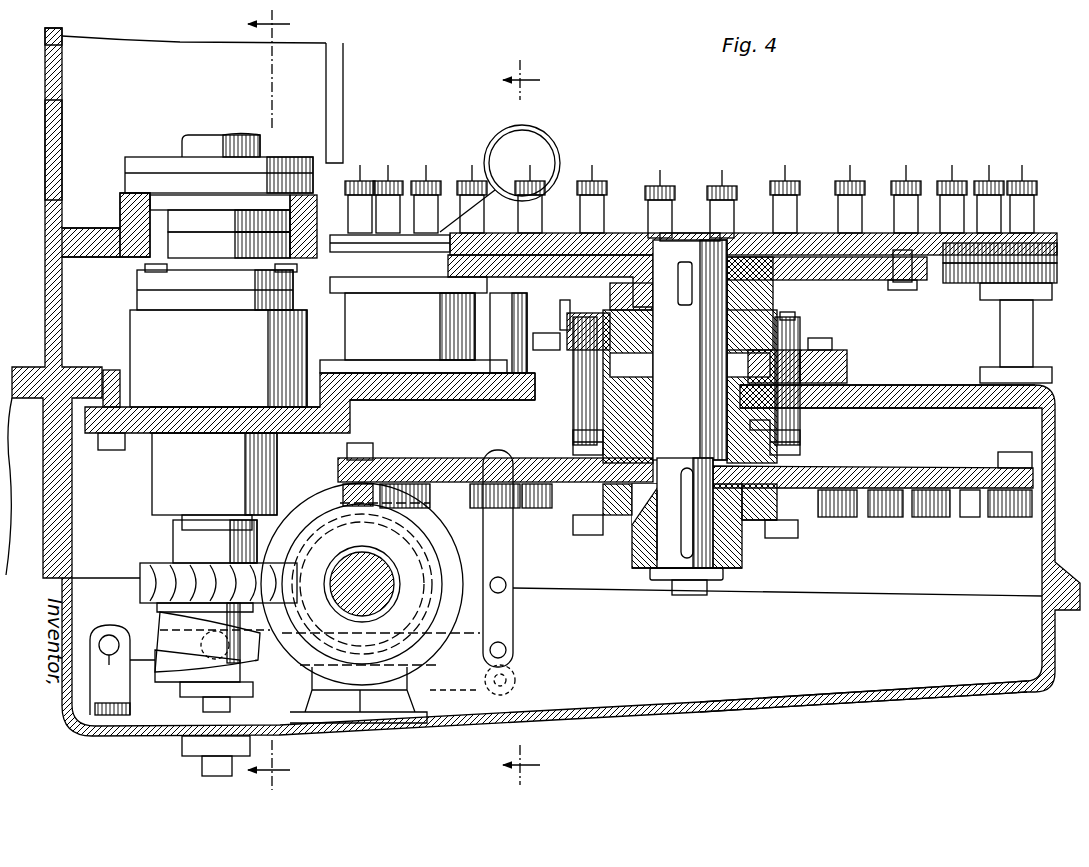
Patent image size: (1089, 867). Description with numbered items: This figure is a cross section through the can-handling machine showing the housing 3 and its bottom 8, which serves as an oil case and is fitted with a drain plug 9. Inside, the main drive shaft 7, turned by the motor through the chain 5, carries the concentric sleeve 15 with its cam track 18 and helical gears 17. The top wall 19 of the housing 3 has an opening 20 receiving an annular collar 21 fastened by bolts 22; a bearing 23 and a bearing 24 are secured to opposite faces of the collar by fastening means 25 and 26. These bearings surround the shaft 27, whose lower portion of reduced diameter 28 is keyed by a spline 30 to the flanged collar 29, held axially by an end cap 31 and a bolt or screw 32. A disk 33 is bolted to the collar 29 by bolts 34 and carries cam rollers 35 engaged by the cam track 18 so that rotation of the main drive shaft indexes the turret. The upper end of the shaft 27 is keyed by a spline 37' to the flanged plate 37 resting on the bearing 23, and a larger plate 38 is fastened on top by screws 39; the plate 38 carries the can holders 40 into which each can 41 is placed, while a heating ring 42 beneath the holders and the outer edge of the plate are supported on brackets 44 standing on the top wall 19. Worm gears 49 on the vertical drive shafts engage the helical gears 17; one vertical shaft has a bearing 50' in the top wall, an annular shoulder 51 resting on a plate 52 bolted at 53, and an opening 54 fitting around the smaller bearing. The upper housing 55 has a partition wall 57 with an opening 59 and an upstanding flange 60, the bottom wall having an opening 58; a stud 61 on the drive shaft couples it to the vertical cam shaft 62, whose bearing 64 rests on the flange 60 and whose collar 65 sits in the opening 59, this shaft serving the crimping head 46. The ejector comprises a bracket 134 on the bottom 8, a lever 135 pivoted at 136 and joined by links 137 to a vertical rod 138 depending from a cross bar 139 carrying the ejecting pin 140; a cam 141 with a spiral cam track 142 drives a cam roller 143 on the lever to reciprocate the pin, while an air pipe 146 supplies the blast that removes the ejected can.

The housing 3 is at (62, 497).
The crimping head 46 is at (43, 44).
The housing 55 is at (45, 145).
The partition wall 57 is at (68, 238).
The upstanding flange 60 is at (120, 209).
The bottom 8 is at (712, 725).
The chain 5 is at (530, 422).
The bearing 64 is at (143, 165).
The vertical cam shaft 62 is at (203, 138).
The collar 65 is at (233, 204).
The stud 61 is at (240, 236).
The opening 59 is at (145, 267).
The opening 58 is at (118, 325).
The bearing 50' is at (218, 358).
The annular shoulder 51 is at (145, 415).
The plate 52 is at (230, 415).
The opening 54 is at (172, 432).
The bolts 53 is at (340, 432).
The vertical rod 138 is at (490, 414).
The brackets 44 is at (408, 326).
The cross bar 139 is at (503, 345).
The plate 38 is at (816, 236).
The flanged plate 37 is at (687, 265).
The screws 39 is at (905, 282).
The heating ring 42 is at (968, 275).
The pipe 146 is at (560, 170).
The can 41 is at (425, 183).
The can holders 40 is at (580, 210).
The annular collar 21 is at (848, 366).
The bolts 22 is at (548, 345).
The fastening means 25 is at (597, 318).
The ejecting pin 140 is at (564, 307).
The bearing 23 is at (782, 314).
The opening 20 is at (576, 435).
The fastening means 26 is at (585, 440).
The bearing 24 is at (762, 450).
The top wall 19 is at (922, 409).
The sleeve 15 is at (315, 502).
The cam track 18 is at (345, 452).
The disk 33 is at (960, 466).
The cam rollers 35 is at (925, 518).
The spline 37' is at (690, 400).
The shaft 27 is at (675, 520).
The spline 30 is at (670, 548).
The lower portion of reduced diameter 28 is at (640, 572).
The flanged collar 29 is at (742, 548).
The end cap 31 is at (660, 580).
The bolt or screw 32 is at (705, 592).
The bolts 34 is at (580, 520).
The helical gears 17 is at (440, 555).
The main drive shaft 7 is at (375, 562).
The links 137 is at (505, 650).
The lever 135 is at (455, 675).
The worm gears 49 is at (211, 561).
The cam 141 is at (157, 606).
The spiral cam track 142 is at (172, 632).
The cam roller 143 is at (200, 681).
The pivotal connection 136 is at (121, 670).
The bracket 134 is at (133, 709).
The drain plug 9 is at (200, 757).